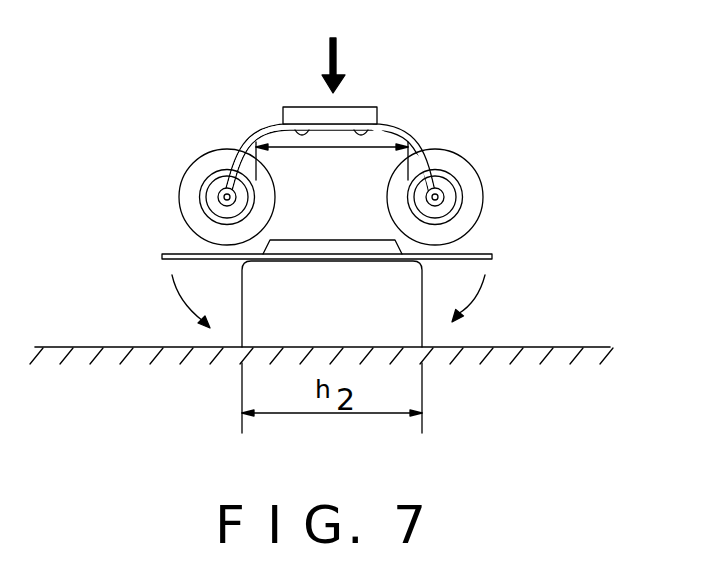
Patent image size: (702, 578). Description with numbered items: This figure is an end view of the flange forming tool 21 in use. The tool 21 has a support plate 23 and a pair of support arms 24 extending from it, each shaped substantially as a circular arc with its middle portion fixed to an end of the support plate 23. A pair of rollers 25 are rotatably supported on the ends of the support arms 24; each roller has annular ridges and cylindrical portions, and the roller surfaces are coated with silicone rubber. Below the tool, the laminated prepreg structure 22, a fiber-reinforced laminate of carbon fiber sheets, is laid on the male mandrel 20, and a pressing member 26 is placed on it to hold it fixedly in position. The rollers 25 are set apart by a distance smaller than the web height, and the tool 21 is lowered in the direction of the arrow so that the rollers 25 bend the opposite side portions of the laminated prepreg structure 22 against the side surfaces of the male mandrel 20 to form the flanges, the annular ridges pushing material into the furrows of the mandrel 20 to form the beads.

The male mandrel 20 is at (423, 318).
The flange forming tool 21 is at (322, 134).
The laminated prepreg structure 22 is at (488, 254).
The support plate 23 is at (362, 108).
The support arms 24 is at (403, 123).
The rollers 25 is at (185, 200).
The pressing member 26 is at (310, 262).